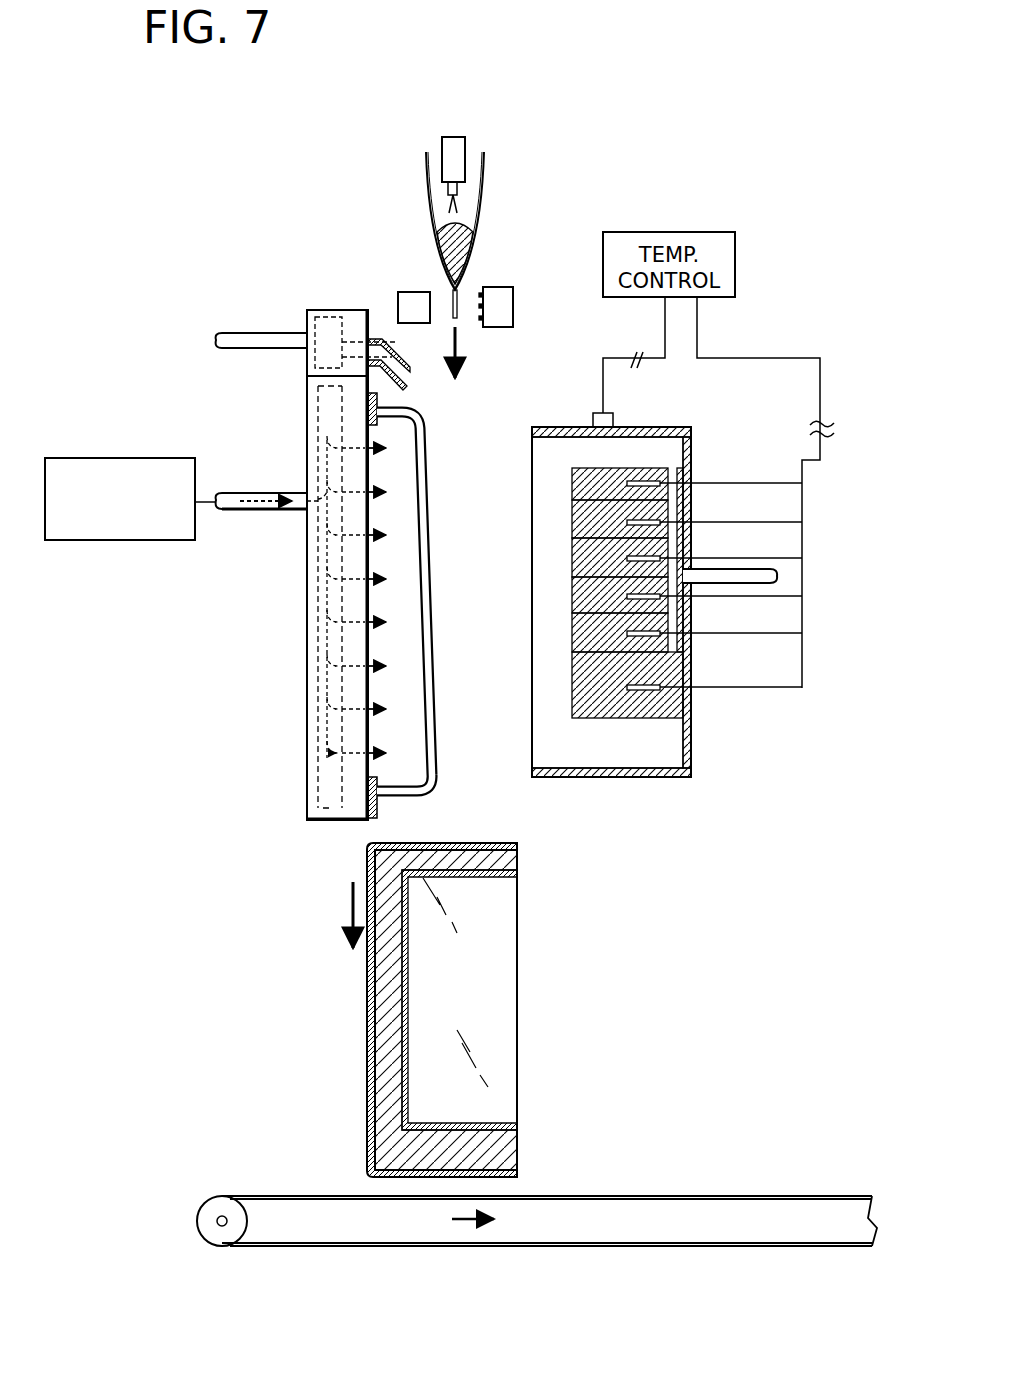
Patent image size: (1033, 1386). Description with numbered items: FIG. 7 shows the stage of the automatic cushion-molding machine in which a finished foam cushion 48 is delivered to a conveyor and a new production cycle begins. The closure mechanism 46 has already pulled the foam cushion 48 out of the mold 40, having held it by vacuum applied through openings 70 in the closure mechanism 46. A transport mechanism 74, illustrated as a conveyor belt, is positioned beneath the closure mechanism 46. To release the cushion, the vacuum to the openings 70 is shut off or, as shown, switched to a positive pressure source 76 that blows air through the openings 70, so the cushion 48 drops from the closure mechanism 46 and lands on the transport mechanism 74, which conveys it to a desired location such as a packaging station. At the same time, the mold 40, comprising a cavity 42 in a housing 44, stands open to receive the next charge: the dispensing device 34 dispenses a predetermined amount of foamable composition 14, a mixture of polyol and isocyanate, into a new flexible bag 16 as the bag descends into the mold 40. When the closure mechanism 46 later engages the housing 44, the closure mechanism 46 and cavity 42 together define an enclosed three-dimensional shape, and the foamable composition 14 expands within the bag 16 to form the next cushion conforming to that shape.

The foamable composition 14 is at (450, 243).
The flexible bag 16 is at (473, 250).
The dispensing device 34 is at (453, 143).
The mold 40 is at (667, 676).
The cavity 42 is at (613, 748).
The housing 44 is at (692, 745).
The closure mechanism 46 is at (307, 688).
The foam cushion 48 is at (370, 1040).
The openings 70 is at (352, 583).
The transport mechanism 74 is at (628, 1194).
The positive pressure source 76 is at (113, 458).